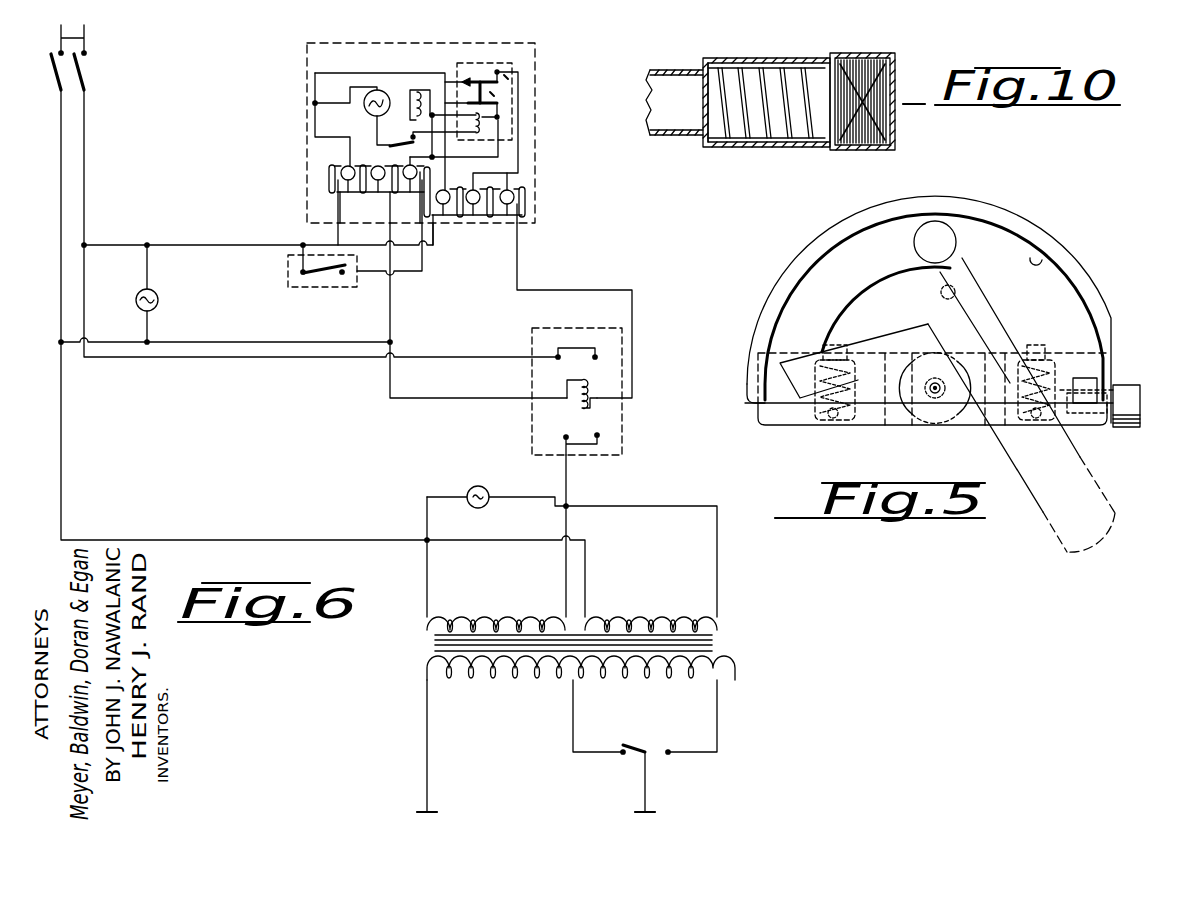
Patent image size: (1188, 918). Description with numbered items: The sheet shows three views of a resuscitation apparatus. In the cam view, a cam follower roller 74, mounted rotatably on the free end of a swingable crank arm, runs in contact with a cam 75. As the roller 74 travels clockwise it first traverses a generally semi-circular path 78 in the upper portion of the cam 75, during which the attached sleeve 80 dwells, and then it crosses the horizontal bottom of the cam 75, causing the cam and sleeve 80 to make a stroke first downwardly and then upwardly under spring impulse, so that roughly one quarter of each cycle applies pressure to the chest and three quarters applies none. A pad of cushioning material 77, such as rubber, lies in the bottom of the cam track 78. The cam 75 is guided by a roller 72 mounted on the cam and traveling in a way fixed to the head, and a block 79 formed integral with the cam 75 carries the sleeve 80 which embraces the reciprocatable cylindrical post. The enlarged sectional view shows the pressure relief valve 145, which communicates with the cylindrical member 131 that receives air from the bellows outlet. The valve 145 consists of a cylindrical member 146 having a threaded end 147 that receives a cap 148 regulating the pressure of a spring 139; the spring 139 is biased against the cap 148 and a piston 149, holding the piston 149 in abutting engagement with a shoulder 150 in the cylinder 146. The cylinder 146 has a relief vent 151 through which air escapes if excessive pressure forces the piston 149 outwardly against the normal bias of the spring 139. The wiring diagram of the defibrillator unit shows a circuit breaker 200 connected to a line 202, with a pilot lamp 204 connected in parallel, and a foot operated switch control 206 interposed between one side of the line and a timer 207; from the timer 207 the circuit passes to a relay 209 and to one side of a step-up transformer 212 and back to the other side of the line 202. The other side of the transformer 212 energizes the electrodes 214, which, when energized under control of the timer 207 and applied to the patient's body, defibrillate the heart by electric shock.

In FIG. 6, the circuit breaker 200 is at (63, 70).
In FIG. 6, the line 202 is at (86, 31).
In FIG. 6, the pilot lamp 204 is at (158, 293).
In FIG. 6, the foot operated switch control 206 is at (322, 288).
In FIG. 6, the timer 207 is at (432, 41).
In FIG. 6, the relay 209 is at (624, 357).
In FIG. 6, the step-up transformer 212 is at (718, 637).
In FIG. 6, the electrodes 214 is at (662, 783).
In FIG. 10, the cylindrical member 131 is at (672, 144).
In FIG. 10, the spring 139 is at (778, 147).
In FIG. 10, the pressure relief valve 145 is at (804, 52).
In FIG. 10, the cylindrical member 146 is at (725, 147).
In FIG. 10, the threaded end 147 is at (845, 150).
In FIG. 10, the cap 148 is at (870, 52).
In FIG. 10, the piston 149 is at (708, 110).
In FIG. 10, the shoulder 150 is at (703, 84).
In FIG. 10, the relief vent 151 is at (728, 58).
In FIG. 5, the roller 72 is at (1140, 392).
In FIG. 5, the cam follower roller 74 is at (843, 328).
In FIG. 5, the cam 75 is at (760, 286).
In FIG. 5, the pad of cushioning material 77 is at (1085, 378).
In FIG. 5, the semi-circular path 78 is at (1042, 262).
In FIG. 5, the block 79 is at (815, 425).
In FIG. 5, the sleeve 80 is at (910, 425).